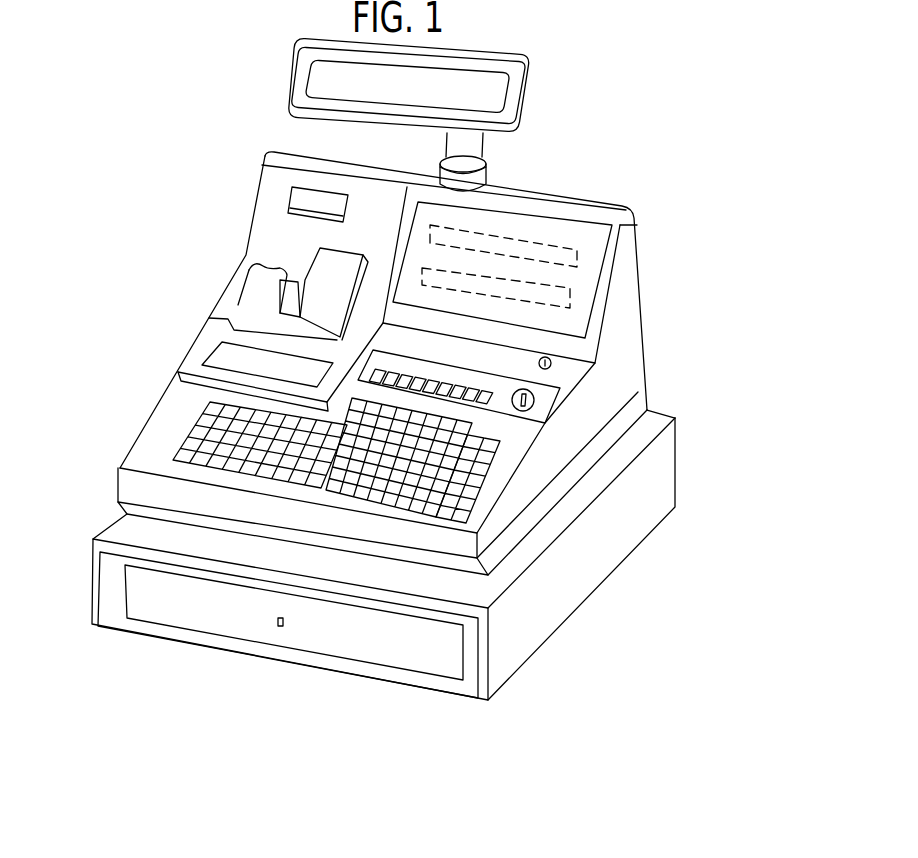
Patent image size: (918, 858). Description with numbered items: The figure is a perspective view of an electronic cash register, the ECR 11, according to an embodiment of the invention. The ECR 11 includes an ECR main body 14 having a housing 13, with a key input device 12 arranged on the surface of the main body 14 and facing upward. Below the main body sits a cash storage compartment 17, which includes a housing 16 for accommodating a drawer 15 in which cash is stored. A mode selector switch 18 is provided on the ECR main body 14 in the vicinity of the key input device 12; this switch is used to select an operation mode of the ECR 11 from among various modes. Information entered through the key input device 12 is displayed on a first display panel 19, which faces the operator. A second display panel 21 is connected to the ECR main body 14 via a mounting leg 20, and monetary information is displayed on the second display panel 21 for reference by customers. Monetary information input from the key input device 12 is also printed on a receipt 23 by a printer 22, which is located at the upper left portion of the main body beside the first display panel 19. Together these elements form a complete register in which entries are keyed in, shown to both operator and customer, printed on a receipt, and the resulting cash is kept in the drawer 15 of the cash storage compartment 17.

The ECR 11 is at (246, 126).
The key input device 12 is at (190, 406).
The housing 13 is at (627, 248).
The ECR main body 14 is at (622, 378).
The drawer 15 is at (142, 592).
The housing 16 is at (612, 555).
The cash storage compartment 17 is at (656, 466).
The mode selector switch 18 is at (534, 400).
The first display panel 19 is at (585, 293).
The mounting leg 20 is at (467, 155).
The second display panel 21 is at (488, 97).
The printer 22 is at (262, 174).
The receipt 23 is at (258, 282).